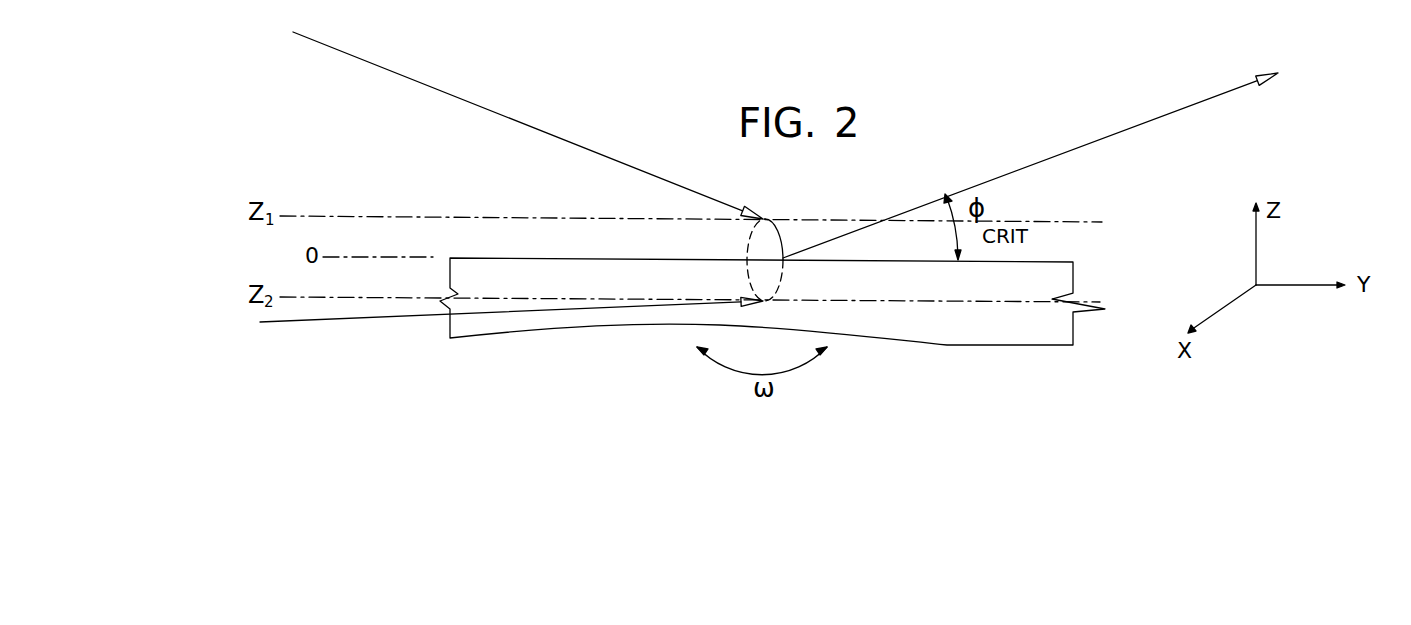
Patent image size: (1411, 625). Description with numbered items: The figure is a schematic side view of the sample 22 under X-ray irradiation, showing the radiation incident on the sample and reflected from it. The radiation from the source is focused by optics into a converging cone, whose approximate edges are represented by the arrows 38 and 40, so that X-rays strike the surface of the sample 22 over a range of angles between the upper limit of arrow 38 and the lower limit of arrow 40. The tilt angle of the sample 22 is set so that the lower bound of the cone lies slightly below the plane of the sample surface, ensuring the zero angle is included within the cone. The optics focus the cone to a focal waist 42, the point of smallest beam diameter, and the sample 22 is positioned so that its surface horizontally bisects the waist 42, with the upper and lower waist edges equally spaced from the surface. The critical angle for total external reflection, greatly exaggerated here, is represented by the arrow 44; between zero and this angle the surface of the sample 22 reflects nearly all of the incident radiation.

The sample 22 is at (892, 338).
The arrow 38 is at (426, 84).
The arrow 40 is at (367, 318).
The focal waist 42 is at (785, 257).
The arrow 44 is at (1050, 158).